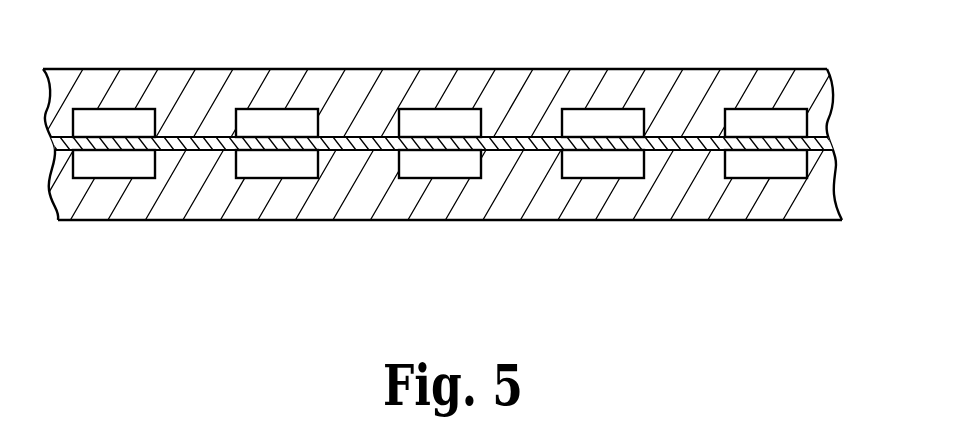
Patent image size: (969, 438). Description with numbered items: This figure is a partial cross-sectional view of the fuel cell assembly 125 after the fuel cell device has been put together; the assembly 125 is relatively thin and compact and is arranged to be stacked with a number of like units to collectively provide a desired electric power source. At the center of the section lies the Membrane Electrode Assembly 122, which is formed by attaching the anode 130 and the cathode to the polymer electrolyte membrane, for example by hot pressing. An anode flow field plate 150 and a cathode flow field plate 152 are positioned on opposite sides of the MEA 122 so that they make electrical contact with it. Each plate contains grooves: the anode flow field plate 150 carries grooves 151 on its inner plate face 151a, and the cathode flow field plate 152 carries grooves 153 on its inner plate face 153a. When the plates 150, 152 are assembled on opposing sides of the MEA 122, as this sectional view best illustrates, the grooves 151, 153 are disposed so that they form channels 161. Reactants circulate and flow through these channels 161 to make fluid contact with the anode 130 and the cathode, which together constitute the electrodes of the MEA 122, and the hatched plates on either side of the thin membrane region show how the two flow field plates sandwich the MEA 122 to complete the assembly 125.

The anode 130 is at (127, 263).
The fuel cell assembly 125 is at (717, 223).
The membrane electrode assembly 122 is at (695, 138).
The anode flow field plate 150 is at (145, 220).
The cathode flow field plate 152 is at (477, 69).
The grooves 151 is at (70, 175).
The grooves 153 is at (402, 109).
The inner plate face 151a is at (216, 150).
The inner plate face 153a is at (216, 137).
The channels 161 is at (782, 174).